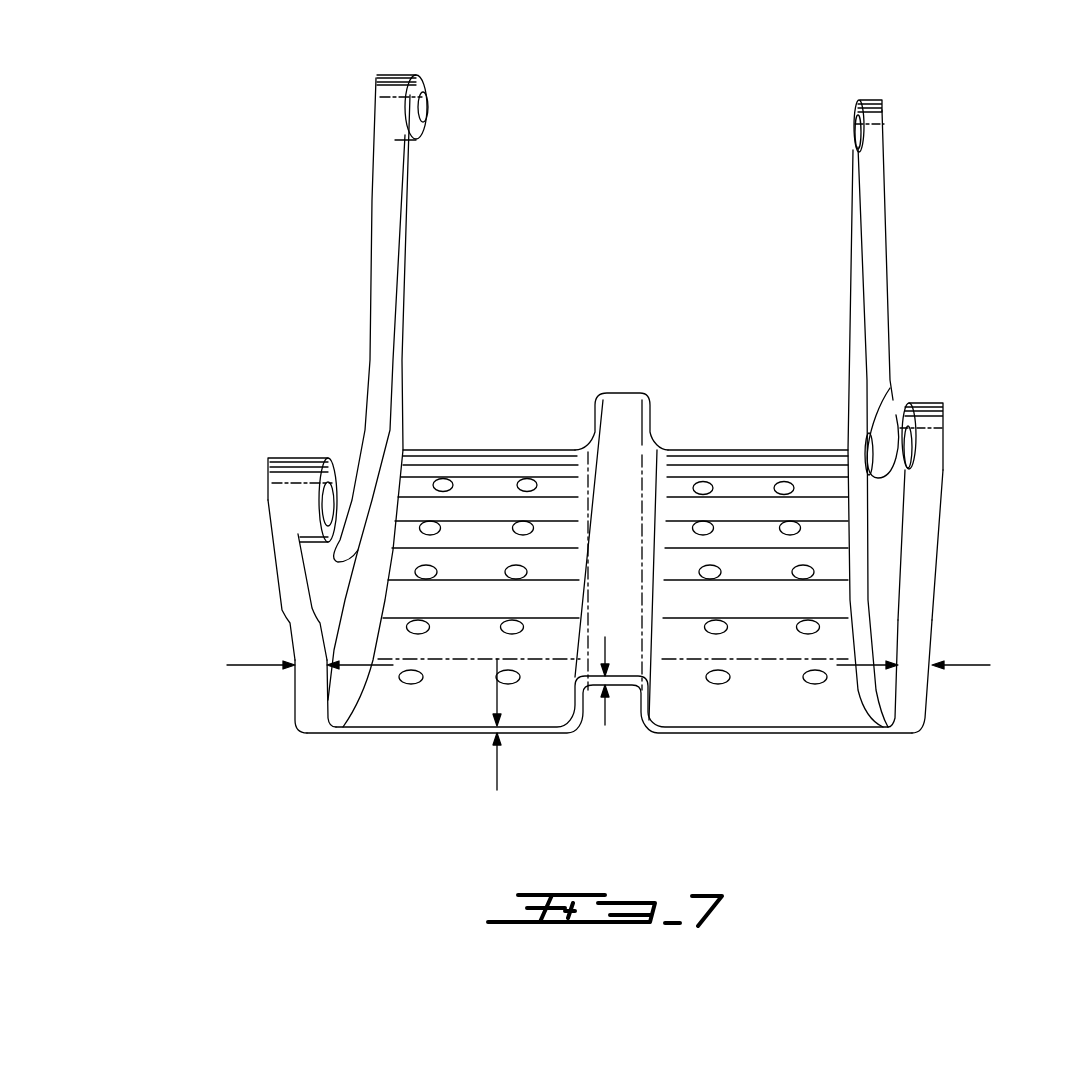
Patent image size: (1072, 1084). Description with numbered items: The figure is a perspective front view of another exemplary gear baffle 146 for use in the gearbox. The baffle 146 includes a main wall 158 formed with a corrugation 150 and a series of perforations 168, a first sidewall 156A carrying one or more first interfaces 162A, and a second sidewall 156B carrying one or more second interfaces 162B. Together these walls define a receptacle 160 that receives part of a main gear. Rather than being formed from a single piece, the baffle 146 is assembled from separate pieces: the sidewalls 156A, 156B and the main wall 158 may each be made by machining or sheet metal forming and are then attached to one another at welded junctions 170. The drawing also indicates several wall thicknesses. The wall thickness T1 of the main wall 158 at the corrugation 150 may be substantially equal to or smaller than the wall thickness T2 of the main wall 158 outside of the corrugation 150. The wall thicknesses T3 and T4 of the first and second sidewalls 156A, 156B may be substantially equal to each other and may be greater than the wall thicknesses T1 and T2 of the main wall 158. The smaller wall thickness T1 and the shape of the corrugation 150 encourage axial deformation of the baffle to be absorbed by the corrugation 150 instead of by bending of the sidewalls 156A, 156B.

The gear baffle 146 is at (170, 229).
The corrugation 150 is at (622, 415).
The first sidewall 156A is at (372, 380).
The second sidewall 156B is at (880, 287).
The main wall 158 is at (760, 735).
The receptacle 160 is at (648, 270).
The first interface 162A is at (410, 103).
The second interface 162B is at (870, 130).
The perforations 168 is at (527, 487).
The welded junction 170 is at (403, 450).
The wall thickness T1 is at (607, 712).
The wall thickness T2 is at (490, 790).
The wall thickness T3 is at (240, 668).
The wall thickness T4 is at (980, 663).